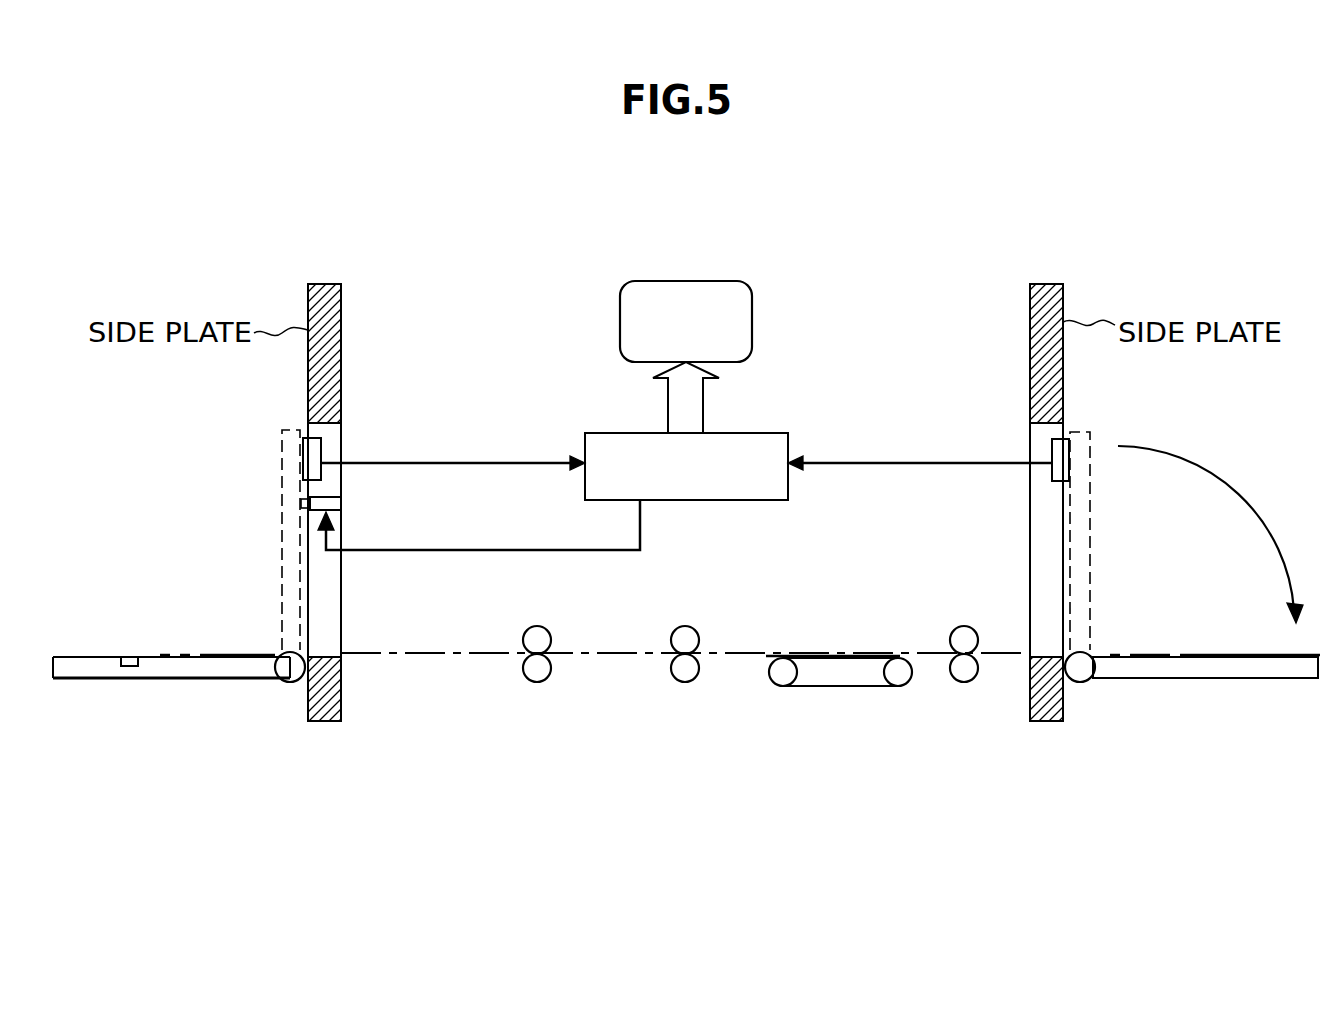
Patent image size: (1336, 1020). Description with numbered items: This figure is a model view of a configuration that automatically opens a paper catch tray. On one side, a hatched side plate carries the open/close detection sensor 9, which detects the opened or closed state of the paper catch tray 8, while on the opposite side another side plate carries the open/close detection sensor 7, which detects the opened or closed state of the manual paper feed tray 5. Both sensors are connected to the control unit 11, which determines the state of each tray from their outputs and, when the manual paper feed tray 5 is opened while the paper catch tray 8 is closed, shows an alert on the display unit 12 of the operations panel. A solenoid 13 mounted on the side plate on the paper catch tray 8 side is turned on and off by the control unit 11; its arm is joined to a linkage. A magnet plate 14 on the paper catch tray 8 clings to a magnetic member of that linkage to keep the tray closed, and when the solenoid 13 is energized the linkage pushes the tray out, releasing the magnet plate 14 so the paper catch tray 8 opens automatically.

The manual paper feed tray 5 is at (1201, 680).
The open/close detection sensor 7 is at (1052, 447).
The paper catch tray 8 is at (176, 680).
The open/close detection sensor 9 is at (321, 444).
The control unit 11 is at (760, 433).
The display unit 12 is at (752, 300).
The solenoid 13 is at (341, 502).
The magnet plate 14 is at (300, 506).